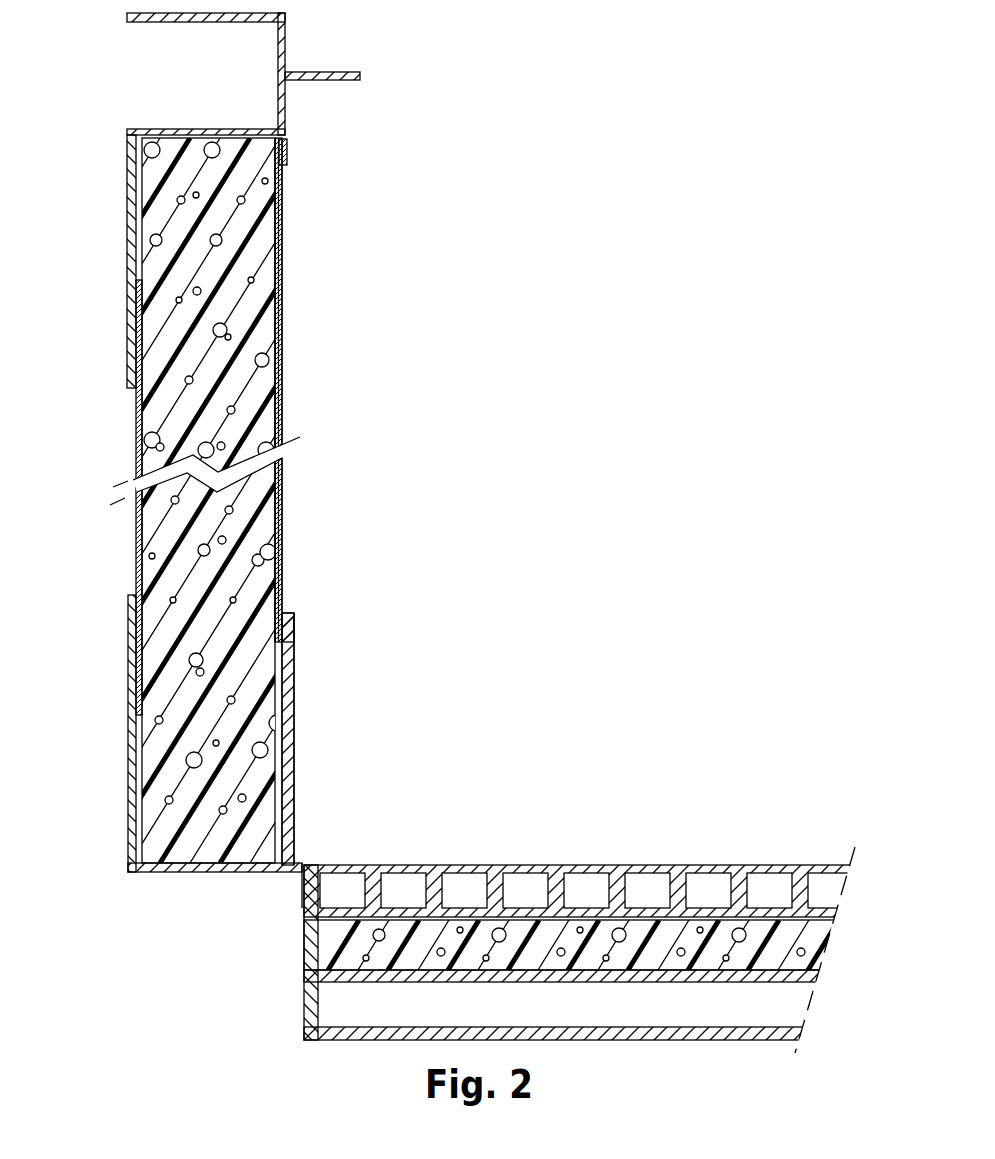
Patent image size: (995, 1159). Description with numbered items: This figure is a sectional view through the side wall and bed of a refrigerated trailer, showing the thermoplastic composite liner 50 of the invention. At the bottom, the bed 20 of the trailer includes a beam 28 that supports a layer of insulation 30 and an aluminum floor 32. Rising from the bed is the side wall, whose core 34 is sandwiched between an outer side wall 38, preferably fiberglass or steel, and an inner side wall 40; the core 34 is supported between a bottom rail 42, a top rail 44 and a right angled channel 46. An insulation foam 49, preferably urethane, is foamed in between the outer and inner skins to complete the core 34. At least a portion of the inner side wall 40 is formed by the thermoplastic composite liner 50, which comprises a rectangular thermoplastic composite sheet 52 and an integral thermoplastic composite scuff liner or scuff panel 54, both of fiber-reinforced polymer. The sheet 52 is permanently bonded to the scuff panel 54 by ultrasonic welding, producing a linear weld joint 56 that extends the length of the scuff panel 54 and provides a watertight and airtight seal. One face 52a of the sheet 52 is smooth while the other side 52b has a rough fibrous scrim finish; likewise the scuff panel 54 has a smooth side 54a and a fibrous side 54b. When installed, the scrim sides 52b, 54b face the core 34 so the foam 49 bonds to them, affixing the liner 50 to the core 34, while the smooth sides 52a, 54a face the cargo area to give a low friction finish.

The bed 20 is at (285, 997).
The beam 28 is at (737, 1013).
The layer of insulation 30 is at (566, 947).
The aluminum floor 32 is at (650, 865).
The core 34 is at (300, 382).
The outer side wall 38 is at (112, 463).
The inner side wall 40 is at (313, 409).
The bottom rail 42 is at (133, 742).
The top rail 44 is at (190, 130).
The right angled channel 46 is at (286, 153).
The insulation foam 49 is at (225, 308).
The thermoplastic composite liner 50 is at (309, 513).
The thermoplastic composite sheet 52 is at (282, 490).
The smooth side of thermoplastic sheet 52a is at (282, 578).
The scrim side of thermoplastic sheet 52b is at (262, 544).
The scuff panel 54 is at (293, 753).
The smooth side of scuff panel 54a is at (293, 797).
The scrim side of scuff panel 54b is at (280, 712).
The weld joint 56 is at (293, 628).